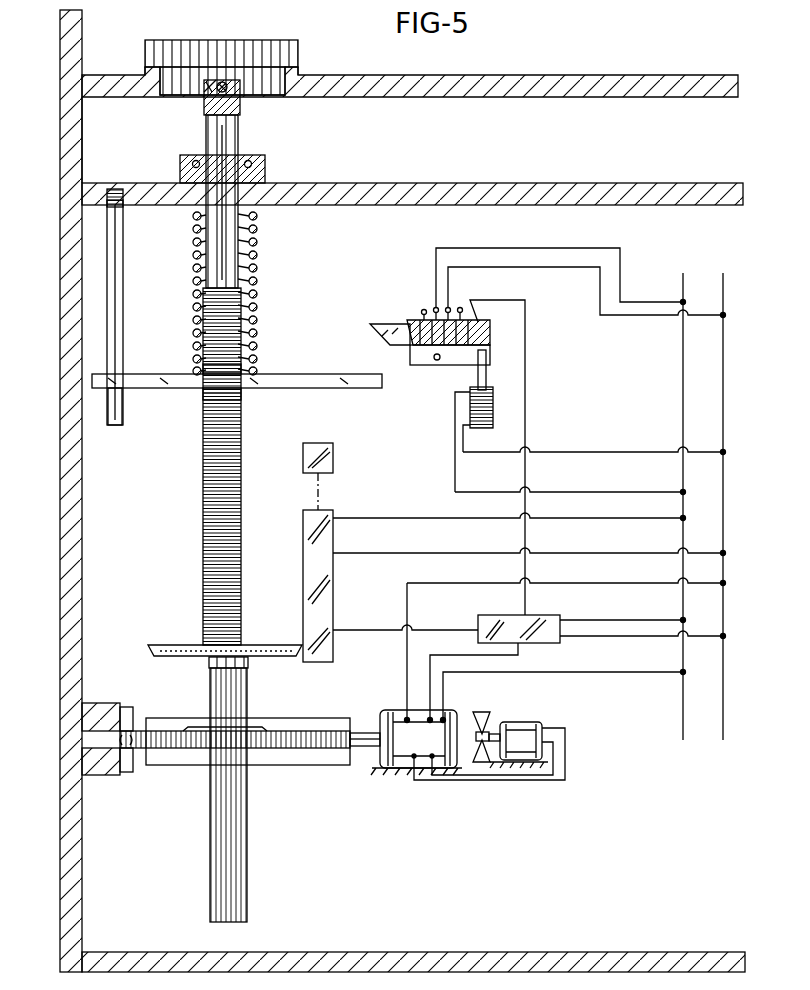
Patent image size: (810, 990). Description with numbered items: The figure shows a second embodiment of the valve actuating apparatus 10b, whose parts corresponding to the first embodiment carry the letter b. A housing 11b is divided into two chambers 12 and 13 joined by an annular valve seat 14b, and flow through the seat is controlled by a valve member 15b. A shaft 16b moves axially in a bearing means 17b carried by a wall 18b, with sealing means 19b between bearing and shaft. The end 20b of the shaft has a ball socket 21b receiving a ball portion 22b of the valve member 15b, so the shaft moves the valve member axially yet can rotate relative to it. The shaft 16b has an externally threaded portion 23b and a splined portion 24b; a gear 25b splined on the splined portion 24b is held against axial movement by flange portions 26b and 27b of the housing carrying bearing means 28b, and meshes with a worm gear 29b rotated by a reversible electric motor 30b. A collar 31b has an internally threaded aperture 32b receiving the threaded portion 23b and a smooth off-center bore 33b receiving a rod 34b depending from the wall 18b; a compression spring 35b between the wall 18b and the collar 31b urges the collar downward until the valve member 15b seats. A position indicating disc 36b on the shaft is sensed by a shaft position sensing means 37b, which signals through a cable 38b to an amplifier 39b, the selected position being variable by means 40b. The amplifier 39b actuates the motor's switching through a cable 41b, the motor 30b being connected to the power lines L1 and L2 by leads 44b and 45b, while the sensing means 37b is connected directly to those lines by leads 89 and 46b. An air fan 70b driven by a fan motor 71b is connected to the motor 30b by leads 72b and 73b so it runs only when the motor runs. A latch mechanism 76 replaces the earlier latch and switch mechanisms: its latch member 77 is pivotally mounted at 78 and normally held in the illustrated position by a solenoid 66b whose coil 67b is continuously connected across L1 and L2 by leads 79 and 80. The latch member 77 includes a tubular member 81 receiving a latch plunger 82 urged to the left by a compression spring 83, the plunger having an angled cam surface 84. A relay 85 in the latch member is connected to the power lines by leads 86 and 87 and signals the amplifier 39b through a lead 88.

The apparatus 10b is at (572, 70).
The housing 11b is at (58, 266).
The chamber 12 is at (401, 71).
The chamber 13 is at (363, 149).
The valve seat 14b is at (300, 74).
The valve member 15b is at (168, 52).
The shaft 16b is at (241, 460).
The bearing means 17b is at (256, 180).
The wall 18b is at (358, 194).
The sealing means 19b is at (248, 162).
The end 20b is at (240, 104).
The ball socket 21b is at (205, 96).
The ball portion 22b is at (226, 80).
The threaded portion 23b is at (204, 542).
The splined portion 24b is at (242, 702).
The gear 25b is at (284, 732).
The flange portion 26b is at (98, 714).
The flange portion 27b is at (104, 774).
The bearing means 28b is at (128, 712).
The worm gear 29b is at (280, 764).
The reversible electric motor 30b is at (403, 774).
The collar 31b is at (293, 372).
The internally threaded aperture 32b is at (207, 400).
The off center bore 33b is at (120, 392).
The rod 34b is at (118, 284).
The compression spring 35b is at (253, 300).
The position indicating disc 36b is at (266, 644).
The shaft position sensing means 37b is at (336, 588).
The cable 38b is at (370, 634).
The amplifier 39b is at (546, 614).
The means 40b is at (330, 448).
The cable 41b is at (464, 654).
The lead 44b is at (594, 672).
The lead 45b is at (410, 610).
The lead 46b is at (422, 580).
The solenoid 66b is at (496, 394).
The coil 67b is at (494, 425).
The air fan 70b is at (478, 714).
The fan motor 71b is at (528, 722).
The lead 72b is at (482, 780).
The lead 73b is at (520, 778).
The latch mechanism 76 is at (393, 317).
The latch member 77 is at (487, 346).
The pivot 78 is at (440, 366).
The lead 79 is at (590, 492).
The lead 80 is at (602, 450).
The tubular member 81 is at (452, 318).
The latch plunger 82 is at (424, 310).
The compression spring 83 is at (478, 320).
The angled cam surface 84 is at (368, 334).
The relay 85 is at (436, 306).
The lead 86 is at (515, 248).
The lead 87 is at (546, 278).
The lead 88 is at (526, 358).
The lead 89 is at (394, 516).
The power line L1 is at (678, 494).
The power line L2 is at (718, 494).